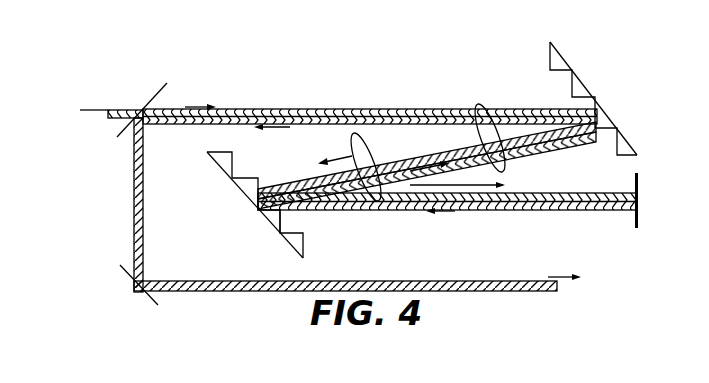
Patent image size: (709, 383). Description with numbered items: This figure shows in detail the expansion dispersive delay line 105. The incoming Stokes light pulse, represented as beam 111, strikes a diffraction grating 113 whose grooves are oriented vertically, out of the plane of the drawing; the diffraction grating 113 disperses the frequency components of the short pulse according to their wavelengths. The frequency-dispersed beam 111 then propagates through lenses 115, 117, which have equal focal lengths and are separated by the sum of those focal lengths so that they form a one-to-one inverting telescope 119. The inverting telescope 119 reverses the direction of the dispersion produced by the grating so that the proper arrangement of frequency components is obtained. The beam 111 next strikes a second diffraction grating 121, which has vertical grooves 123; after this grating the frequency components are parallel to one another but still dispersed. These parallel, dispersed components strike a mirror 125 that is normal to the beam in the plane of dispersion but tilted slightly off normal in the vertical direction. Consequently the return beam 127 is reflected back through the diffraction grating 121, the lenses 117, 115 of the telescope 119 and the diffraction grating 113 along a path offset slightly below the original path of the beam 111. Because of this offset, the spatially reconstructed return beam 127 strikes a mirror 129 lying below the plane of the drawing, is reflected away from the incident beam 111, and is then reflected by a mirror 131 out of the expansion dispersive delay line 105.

The expansion dispersive delay line 105 is at (367, 72).
The beam 111 is at (260, 108).
The diffraction grating 113 is at (583, 80).
The lens 115 is at (500, 166).
The lens 117 is at (347, 147).
The 1:1 inverting telescope 119 is at (412, 150).
The diffraction grating 121 is at (272, 226).
The vertical grooves 123 is at (282, 222).
The mirror 125 is at (638, 218).
The return beam 127 is at (197, 125).
The mirror 129 is at (151, 100).
The mirror 131 is at (142, 297).